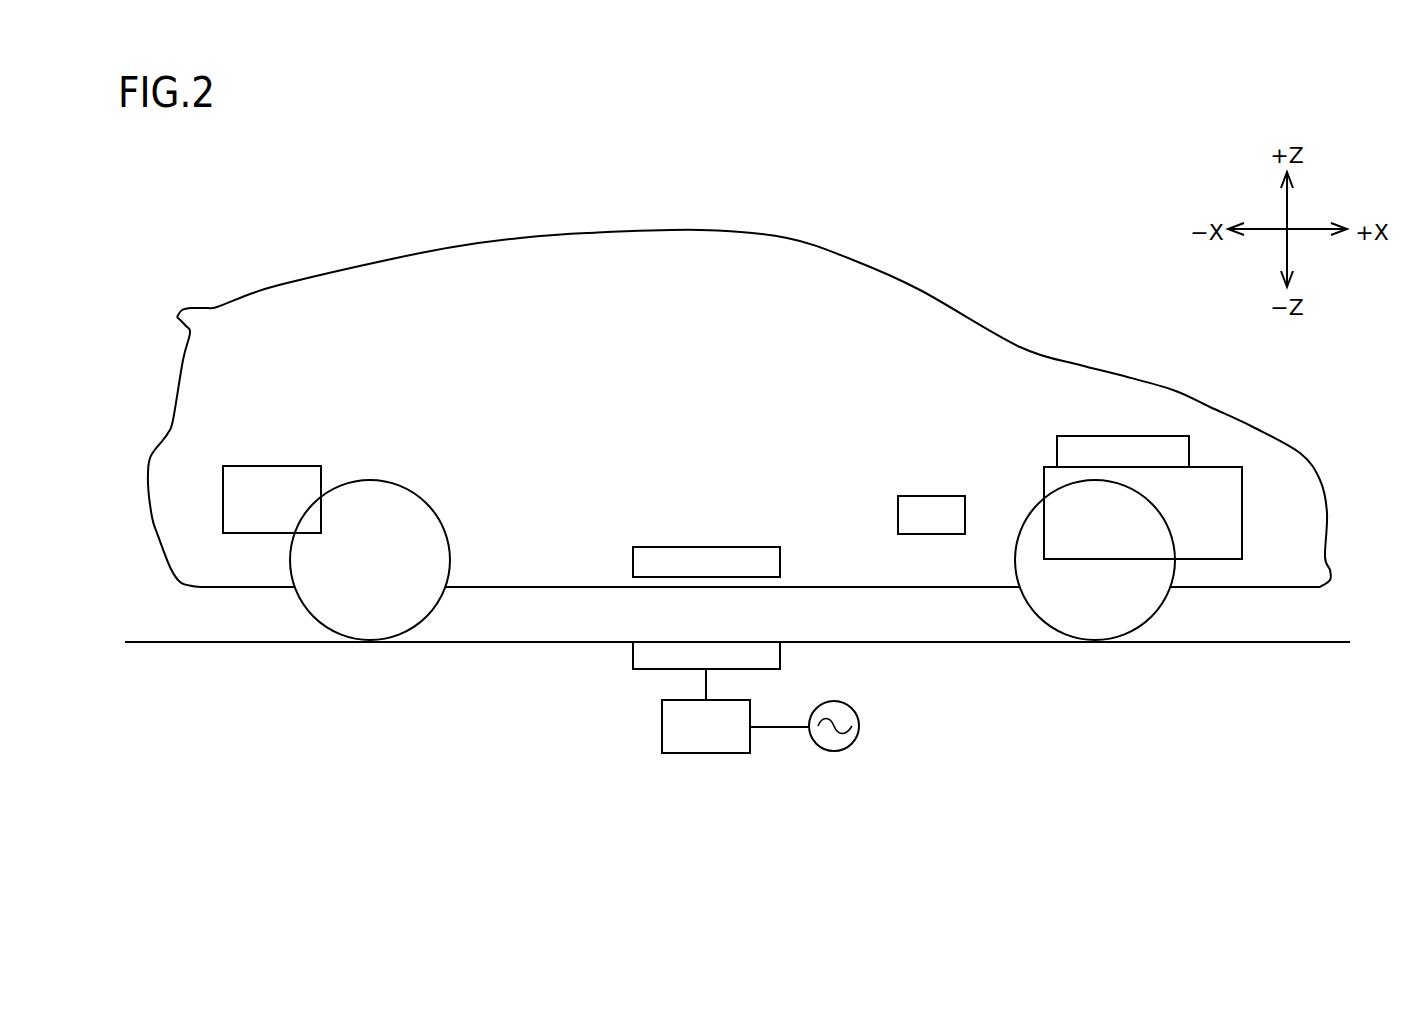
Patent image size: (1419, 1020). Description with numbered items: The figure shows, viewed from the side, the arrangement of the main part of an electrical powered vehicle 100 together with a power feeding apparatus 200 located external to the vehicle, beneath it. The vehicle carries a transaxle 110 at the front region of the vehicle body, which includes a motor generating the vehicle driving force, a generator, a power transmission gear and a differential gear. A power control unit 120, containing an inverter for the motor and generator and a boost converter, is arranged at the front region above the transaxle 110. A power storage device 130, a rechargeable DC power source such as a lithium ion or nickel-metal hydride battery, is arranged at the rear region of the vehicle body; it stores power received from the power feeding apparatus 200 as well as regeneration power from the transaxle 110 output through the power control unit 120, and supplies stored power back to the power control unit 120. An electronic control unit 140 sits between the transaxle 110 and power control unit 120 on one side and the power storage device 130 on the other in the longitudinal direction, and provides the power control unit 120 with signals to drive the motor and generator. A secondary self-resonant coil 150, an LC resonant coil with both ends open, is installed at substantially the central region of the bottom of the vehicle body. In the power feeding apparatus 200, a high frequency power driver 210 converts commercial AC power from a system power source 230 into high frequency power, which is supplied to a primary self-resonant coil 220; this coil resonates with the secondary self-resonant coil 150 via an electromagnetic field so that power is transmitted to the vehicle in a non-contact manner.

The electrical powered vehicle 100 is at (372, 260).
The transaxle 110 is at (1222, 466).
The power control unit 120 is at (1080, 436).
The power storage device 130 is at (270, 466).
The electronic control unit 140 is at (930, 496).
The secondary self-resonant coil 150 is at (705, 547).
The power feeding apparatus 200 is at (701, 732).
The high frequency power driver 210 is at (707, 753).
The primary self-resonant coil 220 is at (780, 657).
The system power source 230 is at (838, 752).